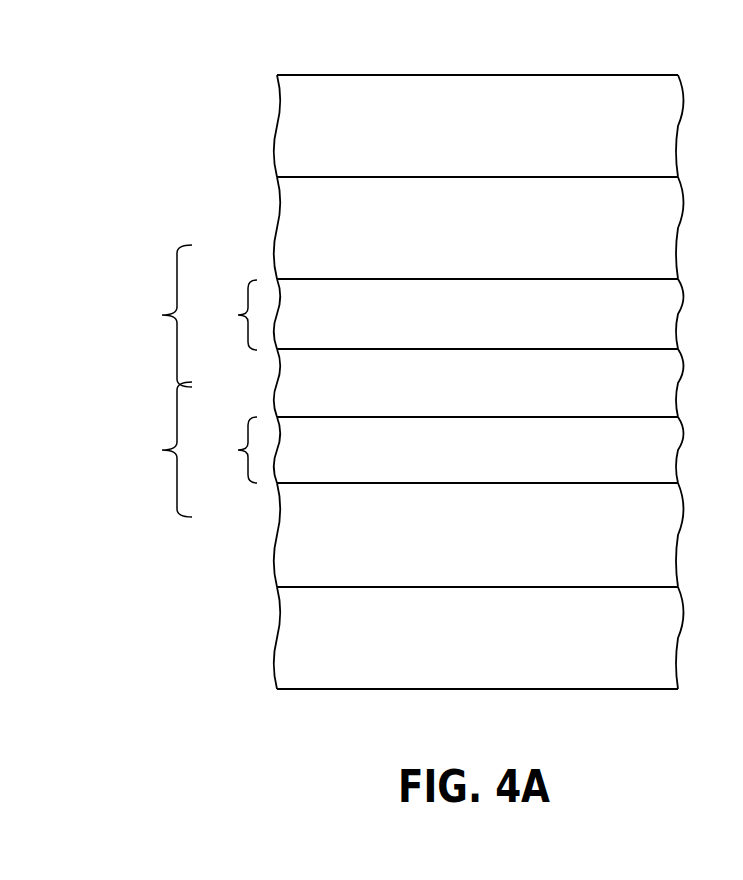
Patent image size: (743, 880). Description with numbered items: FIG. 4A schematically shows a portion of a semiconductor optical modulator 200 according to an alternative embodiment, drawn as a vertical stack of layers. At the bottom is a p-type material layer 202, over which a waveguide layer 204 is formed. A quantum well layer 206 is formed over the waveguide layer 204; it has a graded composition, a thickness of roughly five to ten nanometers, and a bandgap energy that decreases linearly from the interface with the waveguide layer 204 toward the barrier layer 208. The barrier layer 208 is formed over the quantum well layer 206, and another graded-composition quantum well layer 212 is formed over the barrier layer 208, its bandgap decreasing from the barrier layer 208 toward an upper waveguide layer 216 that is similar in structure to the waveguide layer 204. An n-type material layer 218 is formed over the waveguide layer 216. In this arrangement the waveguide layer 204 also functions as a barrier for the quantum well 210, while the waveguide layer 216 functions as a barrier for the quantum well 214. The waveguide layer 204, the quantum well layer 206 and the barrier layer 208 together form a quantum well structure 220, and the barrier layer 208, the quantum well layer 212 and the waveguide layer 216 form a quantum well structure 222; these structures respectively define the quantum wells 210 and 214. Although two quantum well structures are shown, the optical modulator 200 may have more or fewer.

The semiconductor optical modulator 200 is at (219, 48).
The p-type material layer 202 is at (335, 678).
The waveguide layer 204 is at (324, 570).
The quantum well layer 206 is at (330, 470).
The barrier layer 208 is at (329, 405).
The quantum well 210 is at (228, 450).
The quantum well layer 212 is at (329, 335).
The quantum well 214 is at (224, 315).
The waveguide layer 216 is at (325, 261).
The n-type material layer 218 is at (327, 155).
The quantum well structure 220 is at (155, 449).
The quantum well structure 222 is at (155, 316).